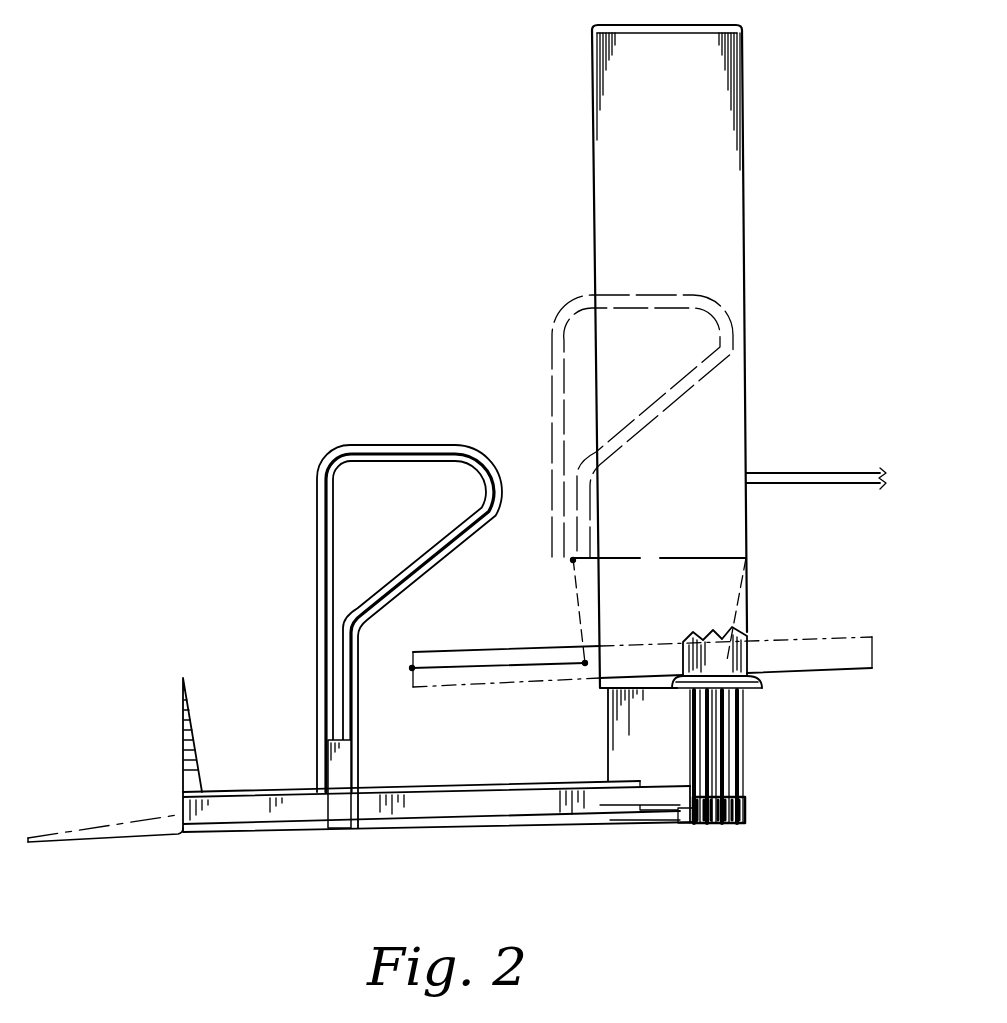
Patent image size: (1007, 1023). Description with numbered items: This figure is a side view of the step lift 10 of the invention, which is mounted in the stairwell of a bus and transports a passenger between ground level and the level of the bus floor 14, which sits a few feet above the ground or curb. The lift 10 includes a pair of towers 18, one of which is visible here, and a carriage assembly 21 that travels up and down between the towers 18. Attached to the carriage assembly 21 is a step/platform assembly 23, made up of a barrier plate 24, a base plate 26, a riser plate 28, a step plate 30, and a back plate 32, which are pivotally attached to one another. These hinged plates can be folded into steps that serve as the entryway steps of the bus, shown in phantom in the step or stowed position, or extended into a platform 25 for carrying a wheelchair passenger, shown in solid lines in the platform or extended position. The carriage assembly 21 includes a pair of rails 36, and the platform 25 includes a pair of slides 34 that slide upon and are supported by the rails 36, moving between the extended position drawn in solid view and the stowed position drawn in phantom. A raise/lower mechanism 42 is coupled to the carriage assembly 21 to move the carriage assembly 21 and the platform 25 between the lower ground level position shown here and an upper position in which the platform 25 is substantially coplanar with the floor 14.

The lift 10 is at (463, 378).
The floor 14 is at (798, 473).
The towers 18 is at (723, 143).
The carriage assembly 21 is at (595, 855).
The step/platform assembly 23 is at (773, 583).
The barrier plate 24 is at (500, 597).
The platform 25 is at (225, 790).
The base plate 26 is at (530, 673).
The riser plate 28 is at (580, 617).
The step plate 30 is at (673, 557).
The back plate 32 is at (733, 620).
The slides 34 is at (272, 790).
The rails 36 is at (467, 805).
The raise/lower mechanism 42 is at (747, 781).